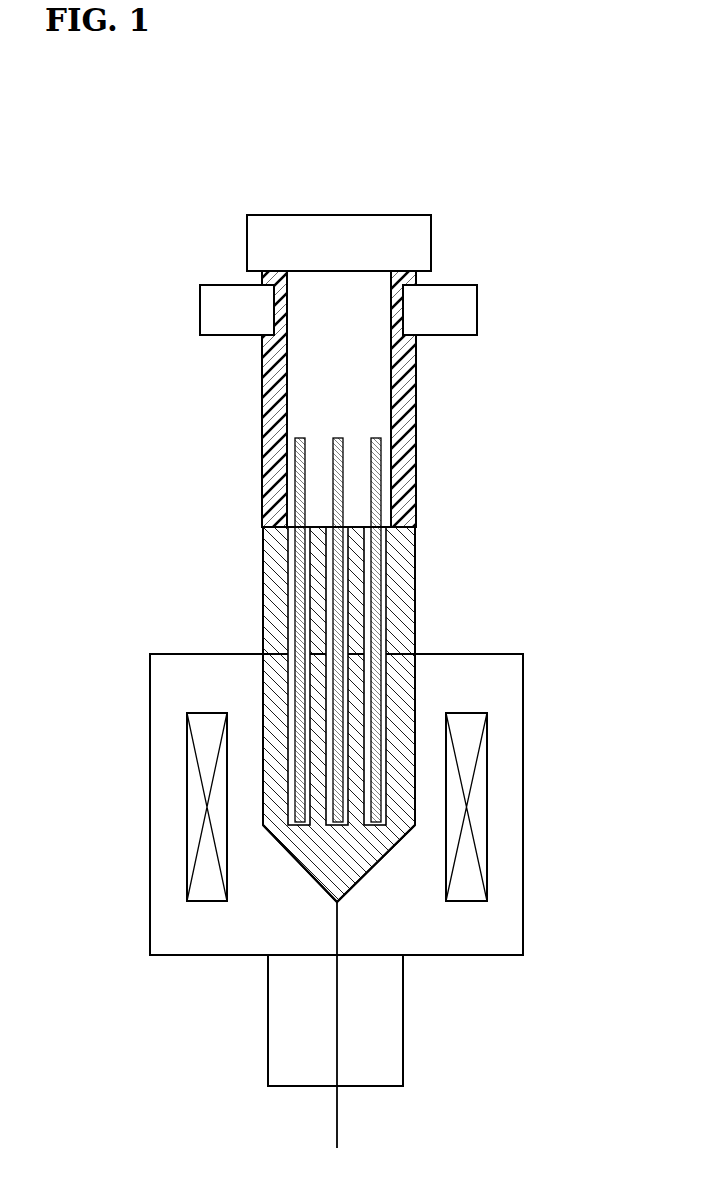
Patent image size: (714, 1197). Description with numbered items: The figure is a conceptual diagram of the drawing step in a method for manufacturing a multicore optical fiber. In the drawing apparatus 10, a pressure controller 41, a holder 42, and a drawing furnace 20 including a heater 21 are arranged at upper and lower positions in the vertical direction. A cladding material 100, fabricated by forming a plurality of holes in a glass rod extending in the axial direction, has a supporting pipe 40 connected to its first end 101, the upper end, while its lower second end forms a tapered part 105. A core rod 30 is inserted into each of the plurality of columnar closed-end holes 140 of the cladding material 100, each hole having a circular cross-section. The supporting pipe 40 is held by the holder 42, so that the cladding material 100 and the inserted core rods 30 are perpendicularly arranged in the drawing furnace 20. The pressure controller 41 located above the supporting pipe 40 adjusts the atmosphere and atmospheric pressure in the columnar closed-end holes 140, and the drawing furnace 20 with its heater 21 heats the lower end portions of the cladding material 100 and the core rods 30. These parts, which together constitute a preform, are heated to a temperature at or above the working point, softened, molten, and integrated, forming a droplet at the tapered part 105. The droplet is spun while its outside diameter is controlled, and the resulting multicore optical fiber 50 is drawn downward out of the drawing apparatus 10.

The drawing apparatus 10 is at (197, 187).
The drawing furnace 20 is at (523, 862).
The heater 21 is at (478, 783).
The core rod 30 is at (376, 462).
The supporting pipe 40 is at (270, 410).
The pressure controller 41 is at (423, 237).
The holder 42 is at (467, 313).
The multicore optical fiber 50 is at (338, 1130).
The cladding material 100 is at (400, 568).
The first end 101 is at (288, 524).
The tapered part 105 is at (288, 855).
The columnar closed-end hole 140 is at (385, 614).